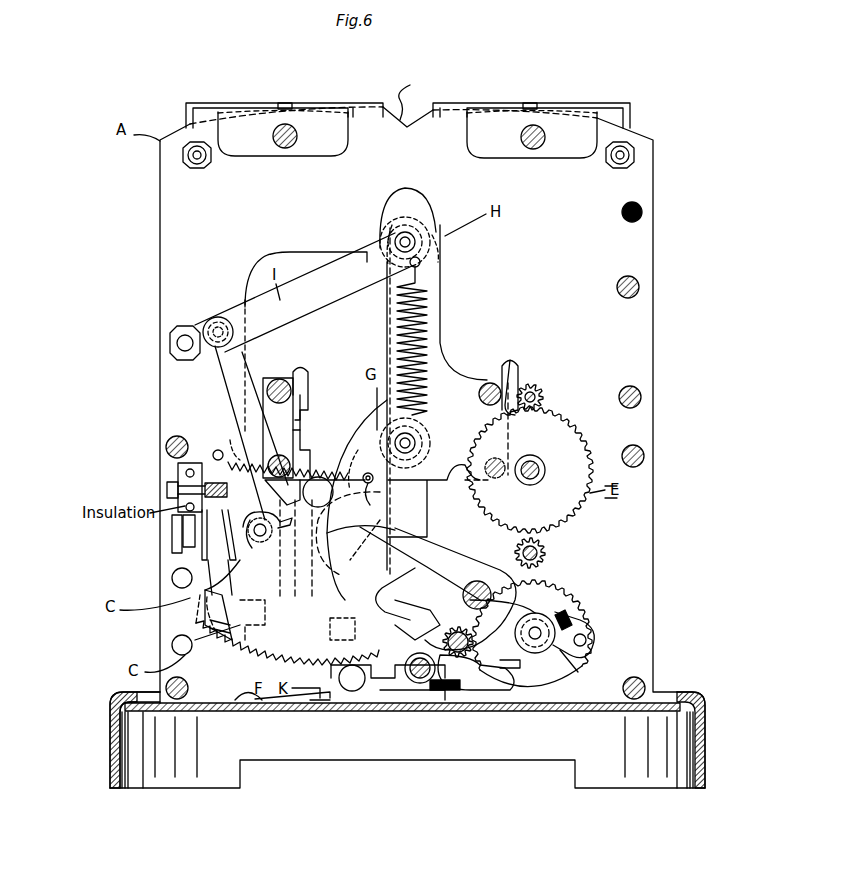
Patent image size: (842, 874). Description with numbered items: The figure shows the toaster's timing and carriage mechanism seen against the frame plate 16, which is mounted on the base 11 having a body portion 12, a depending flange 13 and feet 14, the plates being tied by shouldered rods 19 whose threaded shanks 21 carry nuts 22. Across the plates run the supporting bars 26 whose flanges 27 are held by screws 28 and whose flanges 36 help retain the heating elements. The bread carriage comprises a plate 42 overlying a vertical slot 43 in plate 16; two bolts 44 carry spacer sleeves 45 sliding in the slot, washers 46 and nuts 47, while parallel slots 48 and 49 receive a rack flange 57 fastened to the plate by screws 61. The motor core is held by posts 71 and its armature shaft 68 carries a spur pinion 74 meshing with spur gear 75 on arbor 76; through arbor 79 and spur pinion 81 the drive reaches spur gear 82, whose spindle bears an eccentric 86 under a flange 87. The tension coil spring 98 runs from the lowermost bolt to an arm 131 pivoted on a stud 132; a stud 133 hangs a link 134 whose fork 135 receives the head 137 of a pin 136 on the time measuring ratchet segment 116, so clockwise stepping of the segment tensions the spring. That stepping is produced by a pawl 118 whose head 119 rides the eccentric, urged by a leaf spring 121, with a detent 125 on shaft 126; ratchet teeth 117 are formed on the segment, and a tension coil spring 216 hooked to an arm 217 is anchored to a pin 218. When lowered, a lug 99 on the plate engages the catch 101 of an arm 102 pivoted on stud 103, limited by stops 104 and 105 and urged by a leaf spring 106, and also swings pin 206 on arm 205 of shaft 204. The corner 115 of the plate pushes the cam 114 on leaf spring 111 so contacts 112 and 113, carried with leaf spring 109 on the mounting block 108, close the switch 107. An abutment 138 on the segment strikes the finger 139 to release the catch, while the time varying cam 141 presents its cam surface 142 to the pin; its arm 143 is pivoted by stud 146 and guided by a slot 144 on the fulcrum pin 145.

The base 11 is at (110, 743).
The body portion 12 is at (554, 715).
The flange 13 is at (705, 740).
The feet 14 is at (218, 778).
The plate 16 is at (170, 179).
The shouldered rod 19 is at (168, 445).
The threaded reduced shank 21 is at (202, 166).
The nut 22 is at (205, 156).
The supporting bar 26 is at (200, 103).
The flange 27 is at (320, 143).
The screw 28 is at (287, 148).
The flange 36 is at (188, 118).
The plate 42 is at (438, 353).
The slot 43 is at (418, 196).
The bolt 44 is at (395, 238).
The spacer sleeve 45 is at (390, 215).
The washer 46 is at (436, 220).
The nut 47 is at (420, 243).
The slot 48 is at (305, 372).
The slot 49 is at (513, 360).
The flange 57 is at (297, 395).
The screw 61 is at (278, 382).
The armature shaft 68 is at (540, 390).
The post 71 is at (640, 287).
The spur pinion 74 is at (544, 396).
The spur gear 75 is at (583, 442).
The arbor 76 is at (545, 466).
The arbor 79 is at (545, 550).
The spur pinion 81 is at (538, 548).
The spur gear 82 is at (568, 682).
The eccentric 86 is at (535, 615).
The flange 87 is at (548, 622).
The tension coil spring 98 is at (430, 297).
The lug 99 is at (400, 493).
The catch 101 is at (352, 638).
The arm 102 is at (348, 655).
The stud 103 is at (357, 692).
The stop 104 is at (326, 700).
The stop 105 is at (393, 700).
The leaf spring 106 is at (262, 718).
The switch 107 is at (226, 527).
The mounting block 108 is at (178, 474).
The leaf spring 109 is at (230, 552).
The leaf spring 111 is at (240, 562).
The contact 112 is at (318, 478).
The contact 113 is at (287, 635).
The cam 114 is at (256, 624).
The corner 115 is at (256, 526).
The time measuring ratchet segment 116 is at (205, 608).
The ratchet teeth 117 is at (213, 628).
The pawl 118 is at (422, 678).
The head 119 is at (565, 620).
The leaf spring 121 is at (465, 672).
The detent 125 is at (444, 630).
The shaft 126 is at (465, 582).
The arm 131 is at (322, 285).
The stud 132 is at (175, 330).
The stud 133 is at (215, 318).
The link 134 is at (222, 371).
The fork 135 is at (289, 550).
The pin 136 is at (259, 540).
The head 137 is at (282, 480).
The abutment 138 is at (368, 540).
The finger 139 is at (350, 590).
The time varying cam 141 is at (372, 525).
The cam surface 142 is at (358, 448).
The arm 143 is at (418, 545).
The slot 144 is at (585, 637).
The pin 145 is at (589, 661).
The stud 146 is at (479, 582).
The shaft 204 is at (436, 708).
The arm 205 is at (410, 632).
The pin 206 is at (399, 594).
The tension coil spring 216 is at (230, 440).
The arm 217 is at (372, 500).
The pin 218 is at (218, 450).